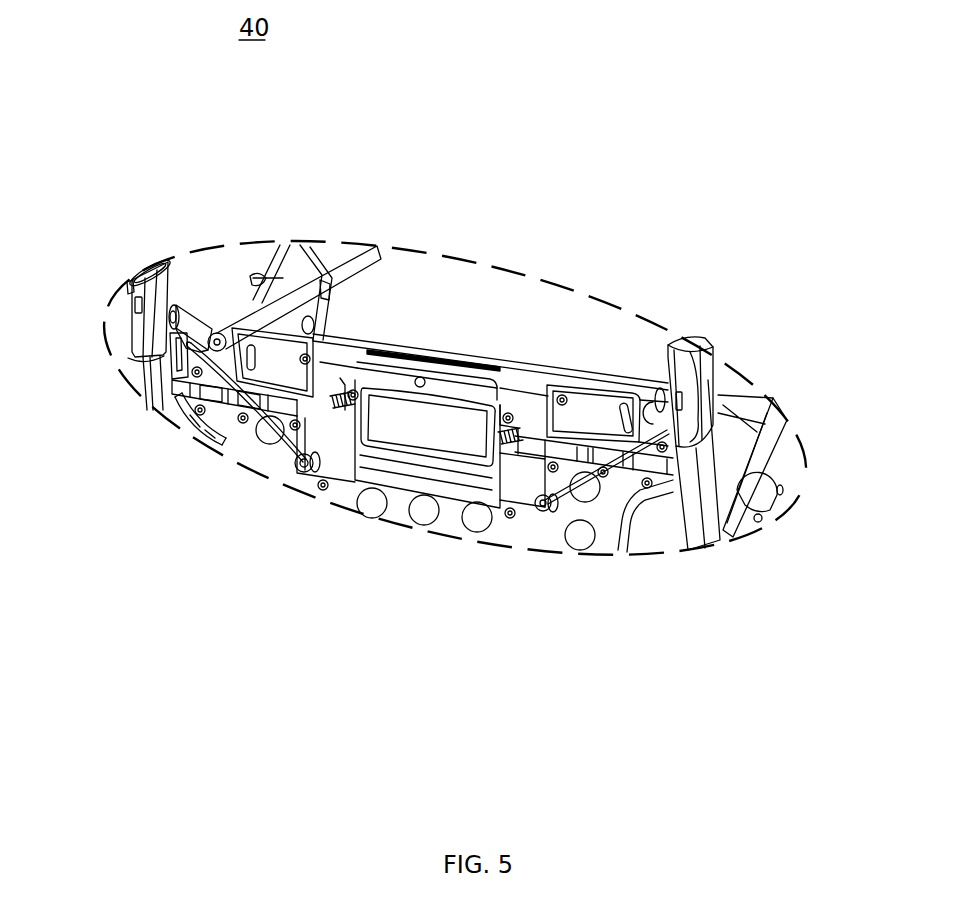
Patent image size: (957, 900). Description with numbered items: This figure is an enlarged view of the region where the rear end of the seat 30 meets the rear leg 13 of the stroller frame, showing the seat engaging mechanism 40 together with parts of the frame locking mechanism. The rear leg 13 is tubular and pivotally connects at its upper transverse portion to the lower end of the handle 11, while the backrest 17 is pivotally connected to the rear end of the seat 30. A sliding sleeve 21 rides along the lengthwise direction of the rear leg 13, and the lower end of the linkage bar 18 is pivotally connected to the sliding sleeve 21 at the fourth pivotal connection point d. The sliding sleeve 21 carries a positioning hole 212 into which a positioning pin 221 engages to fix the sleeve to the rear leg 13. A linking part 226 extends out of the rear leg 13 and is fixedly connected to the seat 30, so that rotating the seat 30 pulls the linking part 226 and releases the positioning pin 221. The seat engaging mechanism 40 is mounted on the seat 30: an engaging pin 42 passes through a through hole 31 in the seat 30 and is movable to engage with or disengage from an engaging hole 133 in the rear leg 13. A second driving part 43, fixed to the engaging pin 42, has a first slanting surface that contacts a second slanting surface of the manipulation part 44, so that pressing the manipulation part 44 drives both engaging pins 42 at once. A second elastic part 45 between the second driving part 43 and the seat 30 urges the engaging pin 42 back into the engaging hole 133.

The seat engaging mechanism 40 is at (422, 426).
The handle 11 is at (785, 460).
The rear leg 13 is at (150, 385).
The engaging hole 133 is at (175, 386).
The backrest 17 is at (322, 272).
The linkage bar 18 is at (205, 325).
The sliding sleeve 21 is at (163, 290).
The positioning hole 212 is at (128, 282).
The positioning pin 221 is at (135, 305).
The linking part 226 is at (300, 470).
The seat 30 is at (398, 513).
The through hole 31 is at (222, 406).
The engaging pin 42 is at (228, 440).
The second driving part 43 is at (333, 352).
The manipulation part 44 is at (449, 386).
The second elastic part 45 is at (378, 372).
The fourth pivotal connection point d is at (173, 318).